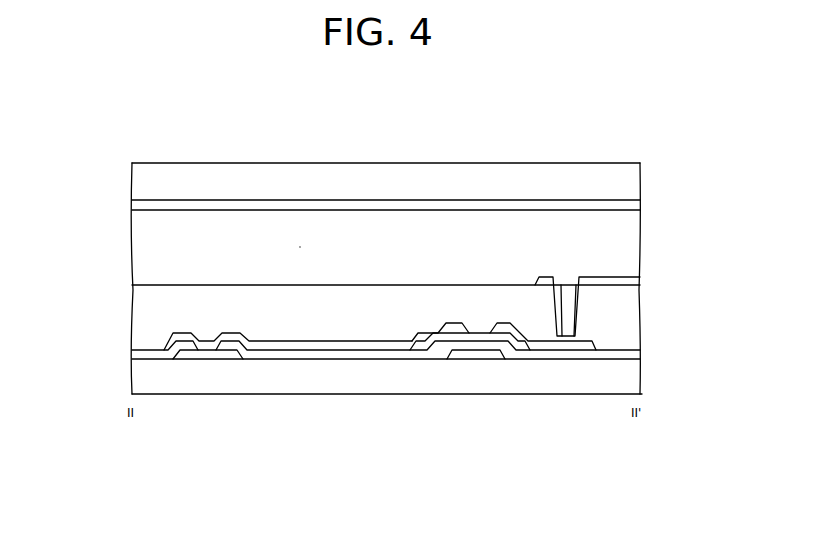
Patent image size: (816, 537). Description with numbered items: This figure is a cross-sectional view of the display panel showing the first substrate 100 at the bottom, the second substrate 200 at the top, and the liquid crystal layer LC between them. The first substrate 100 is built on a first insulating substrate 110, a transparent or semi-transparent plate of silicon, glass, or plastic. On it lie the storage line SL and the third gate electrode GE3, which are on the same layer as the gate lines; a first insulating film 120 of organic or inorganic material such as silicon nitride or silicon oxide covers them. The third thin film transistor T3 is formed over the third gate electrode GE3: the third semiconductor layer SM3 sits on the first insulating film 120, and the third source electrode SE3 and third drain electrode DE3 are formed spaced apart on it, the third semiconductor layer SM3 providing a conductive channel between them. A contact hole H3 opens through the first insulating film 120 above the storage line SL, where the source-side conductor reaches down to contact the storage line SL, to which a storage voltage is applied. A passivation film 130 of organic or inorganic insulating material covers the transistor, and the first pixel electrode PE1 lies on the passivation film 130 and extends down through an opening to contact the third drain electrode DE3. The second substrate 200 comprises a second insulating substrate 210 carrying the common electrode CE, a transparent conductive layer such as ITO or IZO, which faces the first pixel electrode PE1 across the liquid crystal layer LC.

The second substrate 200 is at (112, 163).
The second insulating substrate 210 is at (631, 178).
The common electrode CE is at (641, 204).
The liquid crystal layer LC is at (628, 243).
The first substrate 100 is at (112, 283).
The first insulating substrate 110 is at (628, 380).
The first insulating film 120 is at (633, 353).
The passivation film 130 is at (632, 316).
The first pixel electrode PE1 is at (632, 278).
The storage line SL is at (209, 351).
The third contact hole H3 is at (218, 333).
The third thin film transistor T3 is at (501, 396).
The third source electrode SE3 is at (434, 334).
The third gate electrode GE3 is at (475, 358).
The third semiconductor layer SM3 is at (518, 343).
The third drain electrode DE3 is at (543, 379).